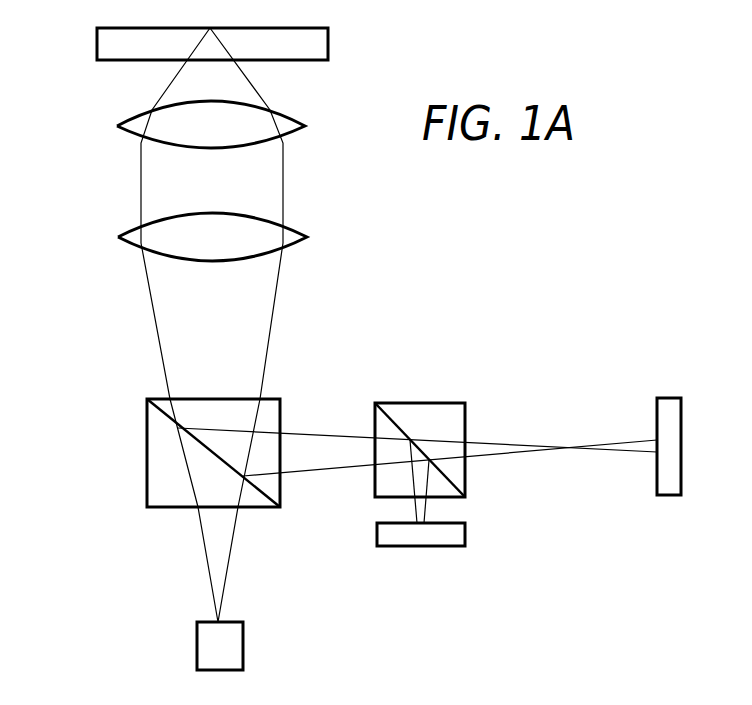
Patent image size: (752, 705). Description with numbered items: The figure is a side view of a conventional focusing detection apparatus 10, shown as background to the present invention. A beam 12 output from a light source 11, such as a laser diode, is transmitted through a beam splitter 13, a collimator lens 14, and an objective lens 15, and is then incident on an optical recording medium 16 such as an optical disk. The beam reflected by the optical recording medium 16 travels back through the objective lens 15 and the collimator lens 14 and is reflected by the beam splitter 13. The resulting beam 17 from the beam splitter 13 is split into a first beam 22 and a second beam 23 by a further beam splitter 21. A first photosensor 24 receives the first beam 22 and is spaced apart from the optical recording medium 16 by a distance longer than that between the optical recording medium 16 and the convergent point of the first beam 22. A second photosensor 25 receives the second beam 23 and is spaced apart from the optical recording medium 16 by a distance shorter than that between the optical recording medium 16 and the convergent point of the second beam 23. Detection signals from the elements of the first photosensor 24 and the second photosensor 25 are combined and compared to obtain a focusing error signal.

The focusing detection apparatus 10 is at (402, 281).
The light source 11 is at (235, 648).
The beam 12 is at (203, 545).
The beam splitter 13 is at (150, 430).
The collimator lens 14 is at (135, 242).
The objective lens 15 is at (133, 125).
The optical recording medium 16 is at (97, 48).
The beam 17 is at (322, 432).
The beam splitter 21 is at (422, 410).
The first beam 22 is at (608, 442).
The second beam 23 is at (410, 509).
The first photosensor 24 is at (670, 402).
The second photosensor 25 is at (457, 531).